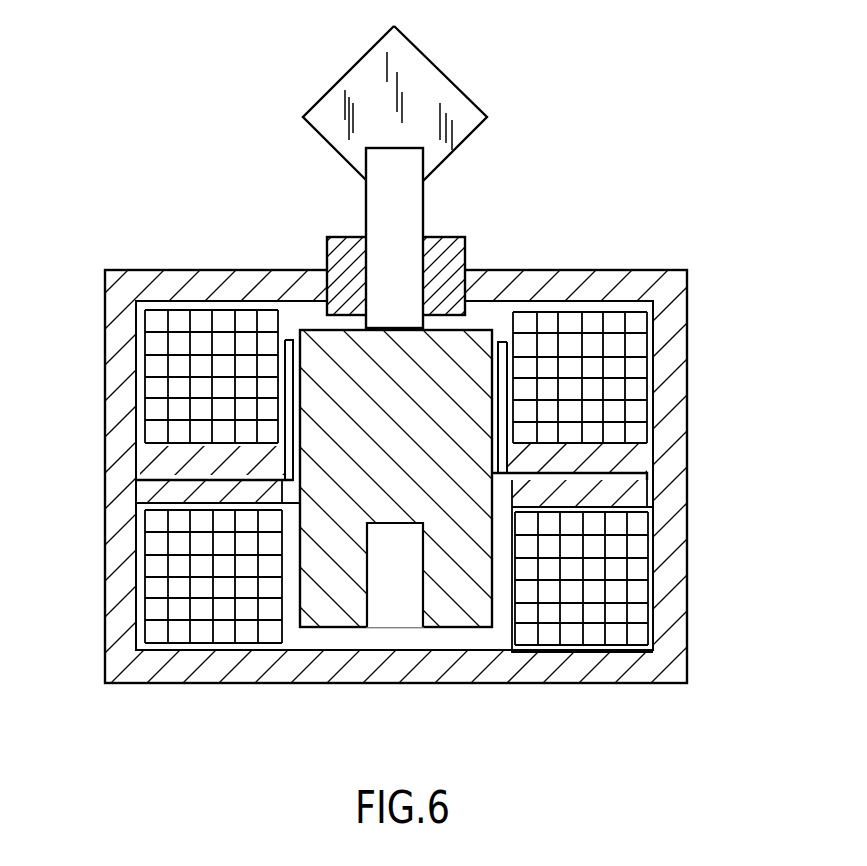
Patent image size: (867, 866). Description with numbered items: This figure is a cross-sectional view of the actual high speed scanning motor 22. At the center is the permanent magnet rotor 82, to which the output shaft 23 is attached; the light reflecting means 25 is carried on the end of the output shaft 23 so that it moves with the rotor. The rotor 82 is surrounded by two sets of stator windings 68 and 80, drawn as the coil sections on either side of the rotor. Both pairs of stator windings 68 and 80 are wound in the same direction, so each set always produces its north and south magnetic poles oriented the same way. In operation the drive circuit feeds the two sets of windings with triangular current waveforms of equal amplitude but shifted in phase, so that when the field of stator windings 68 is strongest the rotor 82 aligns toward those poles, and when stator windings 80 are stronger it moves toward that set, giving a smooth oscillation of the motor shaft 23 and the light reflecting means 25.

The high speed scanning motor 22 is at (128, 131).
The motor shaft 23 is at (365, 203).
The light reflecting means 25 is at (443, 70).
The stator windings 68 is at (147, 373).
The stator windings 80 is at (147, 570).
The rotor 82 is at (352, 630).